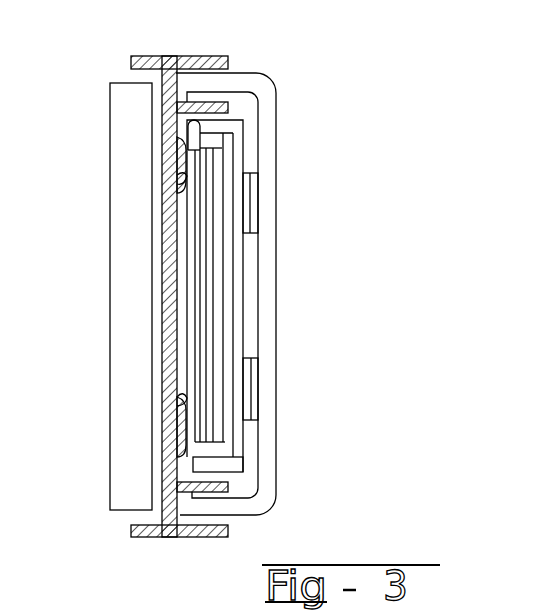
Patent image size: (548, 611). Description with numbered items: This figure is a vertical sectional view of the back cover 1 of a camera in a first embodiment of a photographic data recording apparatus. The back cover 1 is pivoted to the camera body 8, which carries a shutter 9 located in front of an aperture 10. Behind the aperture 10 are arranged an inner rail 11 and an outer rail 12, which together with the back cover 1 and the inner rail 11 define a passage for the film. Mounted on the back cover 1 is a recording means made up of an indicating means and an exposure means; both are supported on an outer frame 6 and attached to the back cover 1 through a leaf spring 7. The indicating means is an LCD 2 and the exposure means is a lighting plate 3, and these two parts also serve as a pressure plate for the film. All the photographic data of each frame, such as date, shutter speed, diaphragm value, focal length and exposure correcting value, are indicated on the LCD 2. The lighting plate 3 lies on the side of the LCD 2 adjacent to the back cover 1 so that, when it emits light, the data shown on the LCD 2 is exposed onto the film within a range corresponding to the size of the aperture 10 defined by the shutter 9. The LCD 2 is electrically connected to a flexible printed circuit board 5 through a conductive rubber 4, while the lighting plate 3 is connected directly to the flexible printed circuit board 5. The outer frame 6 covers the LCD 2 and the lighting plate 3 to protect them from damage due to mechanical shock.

The back cover 1 is at (253, 76).
The LCD 2 is at (190, 256).
The lighting plate 3 is at (222, 292).
The conductive rubber 4 is at (205, 128).
The flexible printed circuit board 5 is at (230, 323).
The outer frame 6 is at (237, 452).
The leaf spring 7 is at (252, 400).
The camera body 8 is at (195, 54).
The shutter 9 is at (128, 195).
The aperture 10 is at (182, 190).
The inner rail 11 is at (180, 178).
The outer rail 12 is at (178, 128).